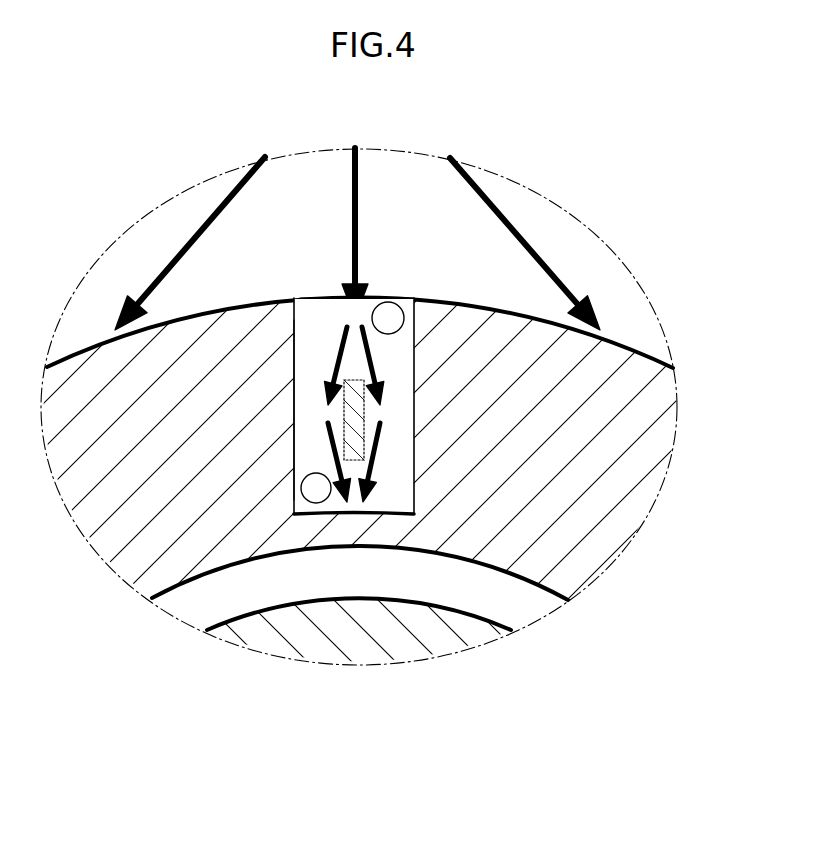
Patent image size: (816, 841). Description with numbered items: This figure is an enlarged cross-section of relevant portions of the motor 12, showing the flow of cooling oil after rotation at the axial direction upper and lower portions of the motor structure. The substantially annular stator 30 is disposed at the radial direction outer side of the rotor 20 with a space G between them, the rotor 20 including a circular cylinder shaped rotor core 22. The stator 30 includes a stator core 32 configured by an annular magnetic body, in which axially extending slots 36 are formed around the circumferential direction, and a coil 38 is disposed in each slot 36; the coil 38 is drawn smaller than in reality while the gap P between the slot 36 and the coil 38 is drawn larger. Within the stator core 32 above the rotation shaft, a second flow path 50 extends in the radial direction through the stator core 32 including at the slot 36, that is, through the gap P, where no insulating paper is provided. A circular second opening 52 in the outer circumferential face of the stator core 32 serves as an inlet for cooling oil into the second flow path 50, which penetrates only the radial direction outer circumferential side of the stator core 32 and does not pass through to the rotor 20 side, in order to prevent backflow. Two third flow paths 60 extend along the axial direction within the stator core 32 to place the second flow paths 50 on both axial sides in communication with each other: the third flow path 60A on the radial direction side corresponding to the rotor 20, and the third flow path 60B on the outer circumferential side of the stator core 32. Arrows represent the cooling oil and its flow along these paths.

The motor 12 is at (570, 177).
The rotor 20 is at (230, 612).
The rotor core 22 is at (484, 602).
The stator 30 is at (83, 348).
The stator core 32 is at (616, 349).
The slot 36 is at (328, 297).
The coil 38 is at (350, 378).
The second flow path 50 is at (393, 482).
The second opening 52 is at (414, 298).
The third flow path 60 is at (388, 429).
The third flow path 60A is at (316, 504).
The third flow path 60B is at (404, 314).
The space G is at (185, 600).
The gap P is at (294, 333).